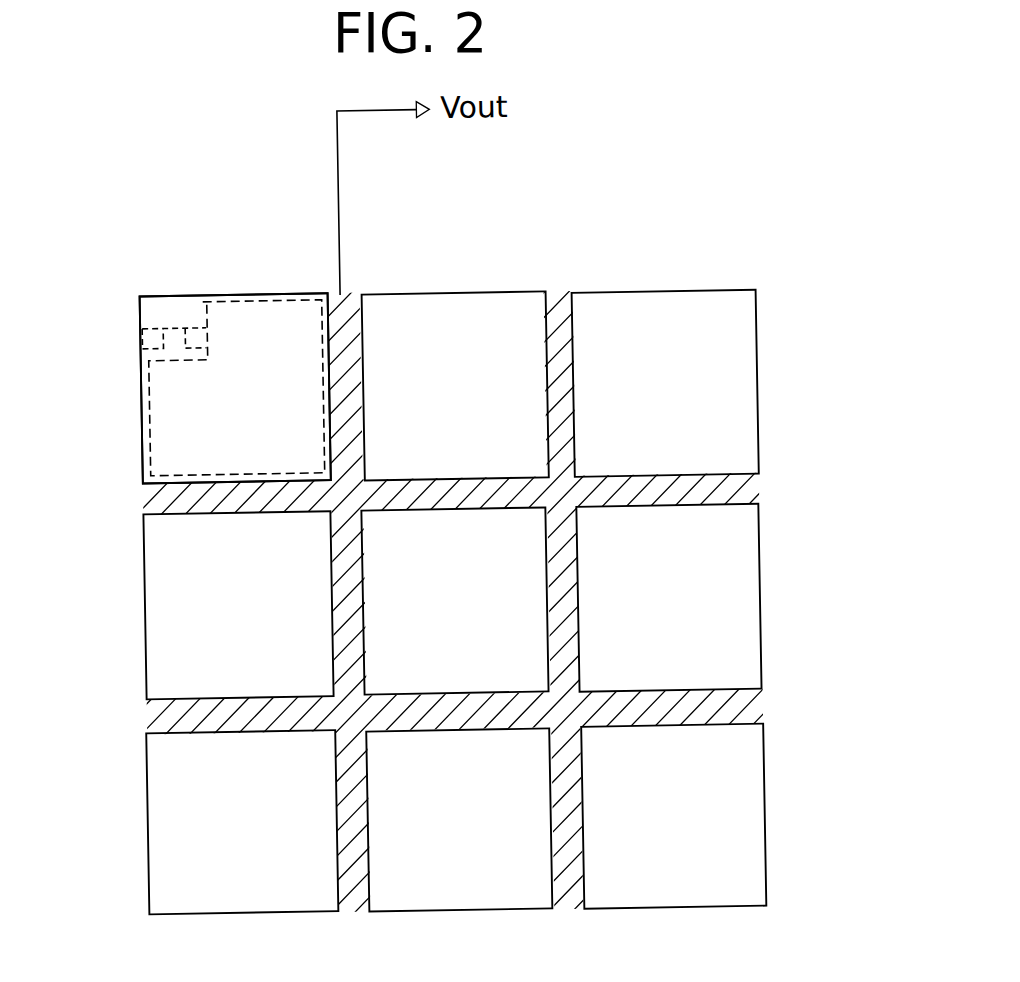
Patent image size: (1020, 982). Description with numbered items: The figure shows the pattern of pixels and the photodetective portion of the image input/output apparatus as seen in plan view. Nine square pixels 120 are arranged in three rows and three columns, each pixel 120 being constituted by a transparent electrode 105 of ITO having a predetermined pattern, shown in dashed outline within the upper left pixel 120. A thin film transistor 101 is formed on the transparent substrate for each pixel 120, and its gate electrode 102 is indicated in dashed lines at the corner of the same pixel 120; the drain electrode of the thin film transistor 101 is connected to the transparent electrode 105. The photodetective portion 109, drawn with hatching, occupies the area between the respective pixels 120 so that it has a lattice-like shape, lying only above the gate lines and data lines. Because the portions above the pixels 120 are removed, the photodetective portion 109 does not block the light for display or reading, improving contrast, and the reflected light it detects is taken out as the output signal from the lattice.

The thin film transistor 101 is at (138, 309).
The gate electrode 102 is at (177, 316).
The transparent electrode 105 is at (244, 302).
The photodetective portion 109 is at (555, 308).
The pixel 120 is at (168, 430).